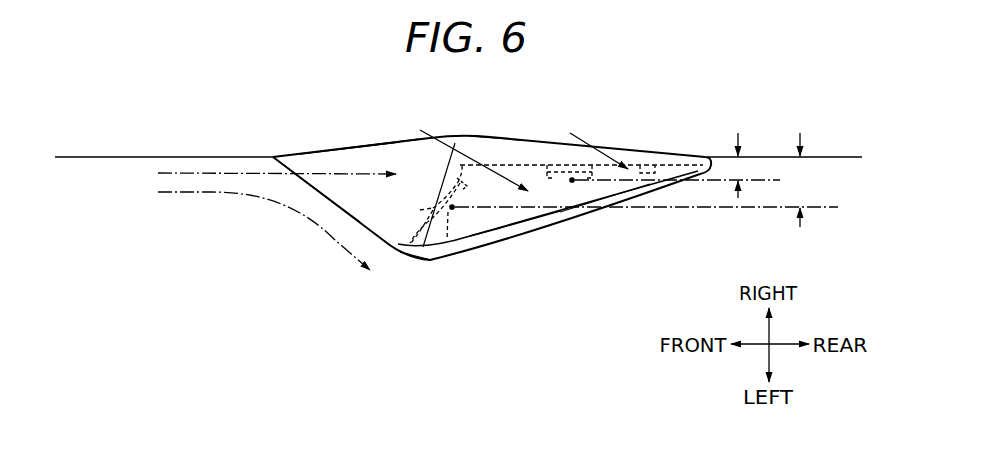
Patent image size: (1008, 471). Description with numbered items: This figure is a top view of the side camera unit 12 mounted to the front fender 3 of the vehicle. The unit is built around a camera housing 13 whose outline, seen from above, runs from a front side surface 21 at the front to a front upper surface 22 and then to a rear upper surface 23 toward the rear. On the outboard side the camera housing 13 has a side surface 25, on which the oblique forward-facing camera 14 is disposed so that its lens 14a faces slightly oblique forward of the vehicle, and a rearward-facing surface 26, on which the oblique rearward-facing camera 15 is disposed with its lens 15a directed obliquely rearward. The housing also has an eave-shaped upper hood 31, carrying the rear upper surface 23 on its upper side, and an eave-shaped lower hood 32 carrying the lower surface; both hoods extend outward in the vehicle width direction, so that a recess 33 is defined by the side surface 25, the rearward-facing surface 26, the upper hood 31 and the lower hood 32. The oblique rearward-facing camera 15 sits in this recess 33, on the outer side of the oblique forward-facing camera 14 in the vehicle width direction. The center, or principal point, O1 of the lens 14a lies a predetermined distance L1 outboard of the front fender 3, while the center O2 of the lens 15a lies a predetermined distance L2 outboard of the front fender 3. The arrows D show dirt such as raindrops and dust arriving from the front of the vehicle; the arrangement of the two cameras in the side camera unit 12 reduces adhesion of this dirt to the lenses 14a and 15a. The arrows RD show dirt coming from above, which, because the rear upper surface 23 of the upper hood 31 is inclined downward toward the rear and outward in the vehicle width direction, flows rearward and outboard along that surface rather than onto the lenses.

The front fender 3 is at (97, 160).
The side camera unit 12 is at (512, 314).
The camera housing 13 is at (340, 147).
The oblique forward-facing camera 14 is at (548, 165).
The lens 14a is at (565, 182).
The oblique rearward-facing camera 15 is at (420, 210).
The lens 15a is at (434, 260).
The front side surface 21 is at (333, 210).
The front upper surface 22 is at (372, 155).
The rear upper surface 23 is at (493, 155).
The side surface 25 is at (655, 163).
The rearward-facing surface 26 is at (407, 258).
The upper hood 31 is at (597, 190).
The lower hood 32 is at (514, 235).
The recess 33 is at (490, 216).
The center of the lens of the oblique forward-facing camera O1 is at (574, 182).
The center of the lens of the oblique rearward-facing camera O2 is at (453, 210).
The arrows D is at (266, 220).
The arrows RD is at (508, 150).
The predetermined distance L1 is at (751, 165).
The predetermined distance L2 is at (812, 180).